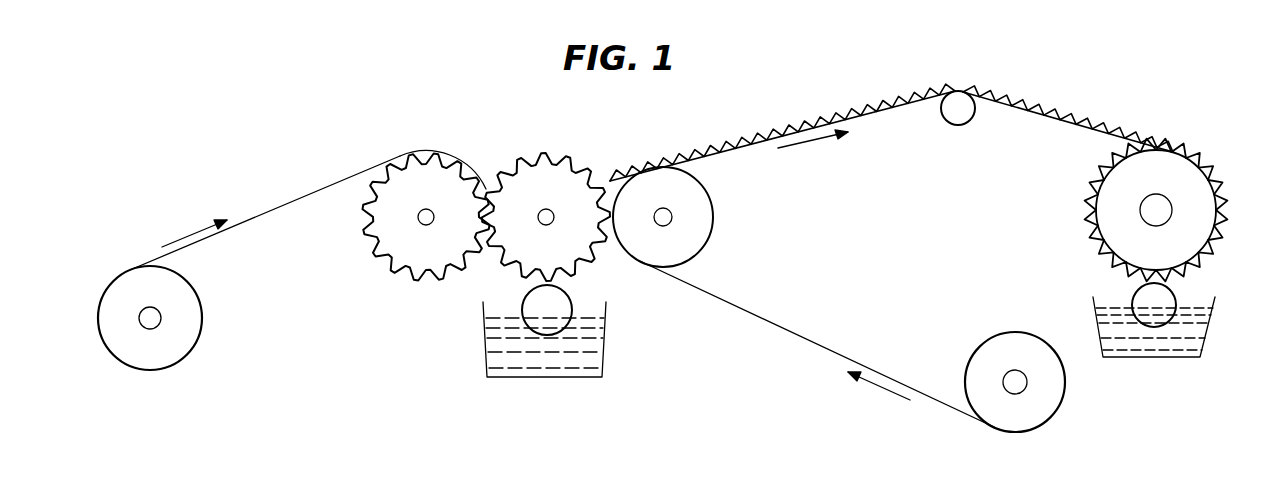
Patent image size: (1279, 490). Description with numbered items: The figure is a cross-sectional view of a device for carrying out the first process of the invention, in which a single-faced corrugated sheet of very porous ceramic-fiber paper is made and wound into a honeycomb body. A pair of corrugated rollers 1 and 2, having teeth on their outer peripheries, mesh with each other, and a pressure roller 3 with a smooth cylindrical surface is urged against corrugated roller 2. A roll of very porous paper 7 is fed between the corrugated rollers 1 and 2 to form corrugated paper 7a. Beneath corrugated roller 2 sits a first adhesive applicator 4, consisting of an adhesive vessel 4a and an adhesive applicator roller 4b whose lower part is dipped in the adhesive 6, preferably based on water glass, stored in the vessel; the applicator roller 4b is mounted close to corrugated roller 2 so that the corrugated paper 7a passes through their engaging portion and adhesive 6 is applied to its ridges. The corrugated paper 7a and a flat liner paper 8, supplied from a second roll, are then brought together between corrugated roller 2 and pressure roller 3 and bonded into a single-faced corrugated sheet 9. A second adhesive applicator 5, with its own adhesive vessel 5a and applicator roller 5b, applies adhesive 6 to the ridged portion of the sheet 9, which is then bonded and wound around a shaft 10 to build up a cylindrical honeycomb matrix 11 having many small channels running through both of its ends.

The corrugated roller 1 is at (447, 170).
The corrugated roller 2 is at (567, 168).
The pressure roller 3 is at (670, 173).
The adhesive applicator 4 is at (544, 371).
The adhesive vessel 4a is at (488, 355).
The adhesive applicator roller 4b is at (570, 303).
The adhesive applicator 5 is at (1149, 363).
The adhesive vessel 5a is at (1097, 320).
The adhesive applicator roller 5b is at (1173, 303).
The adhesive 6 is at (1226, 373).
The porous paper 7 is at (259, 218).
The corrugated paper 7a is at (497, 250).
The flat liner paper 8 is at (815, 345).
The single-faced corrugated sheet 9 is at (850, 110).
The shaft 10 is at (1172, 212).
The cylindrical honeycomb matrix 11 is at (1177, 170).